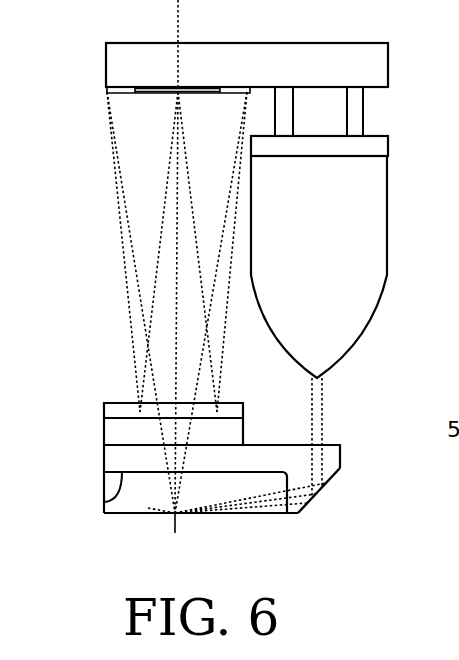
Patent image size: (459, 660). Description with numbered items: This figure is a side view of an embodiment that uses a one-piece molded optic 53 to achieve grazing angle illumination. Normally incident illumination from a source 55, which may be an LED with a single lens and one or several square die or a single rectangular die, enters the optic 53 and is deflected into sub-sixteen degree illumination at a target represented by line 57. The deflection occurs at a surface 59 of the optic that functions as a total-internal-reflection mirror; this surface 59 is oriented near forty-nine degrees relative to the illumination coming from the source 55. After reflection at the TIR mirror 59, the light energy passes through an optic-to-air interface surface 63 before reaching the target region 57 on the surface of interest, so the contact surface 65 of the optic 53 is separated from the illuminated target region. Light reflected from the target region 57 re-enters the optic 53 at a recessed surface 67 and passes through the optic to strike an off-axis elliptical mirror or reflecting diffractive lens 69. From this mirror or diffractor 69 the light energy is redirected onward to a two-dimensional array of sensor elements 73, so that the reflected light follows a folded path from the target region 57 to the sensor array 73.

The one-piece molded optic 53 is at (78, 470).
The source 55 is at (387, 267).
The target 57 is at (174, 524).
The total-internal-reflection mirror surface 59 is at (330, 482).
The optic-to-air interface surface 63 is at (292, 468).
The contact surface 65 is at (292, 515).
The recessed surface 67 is at (105, 502).
The off-axis elliptical mirror or reflecting diffractive lens 69 is at (106, 88).
The two-dimensional array of sensor elements 73 is at (141, 93).